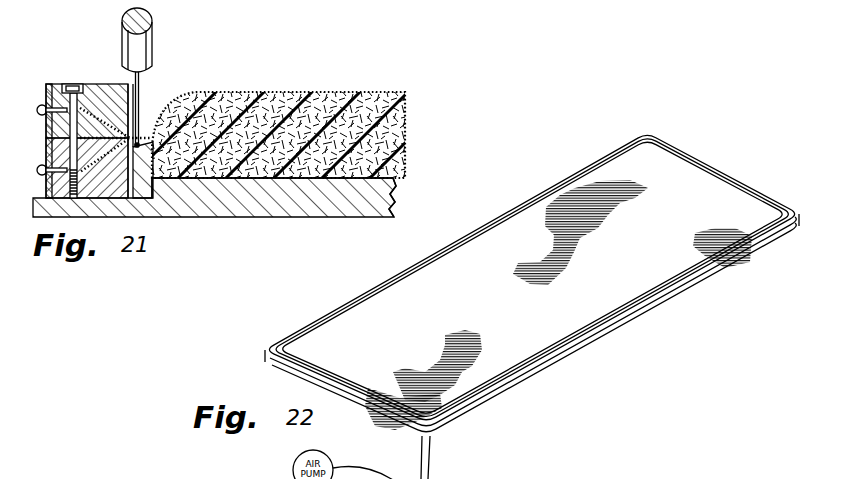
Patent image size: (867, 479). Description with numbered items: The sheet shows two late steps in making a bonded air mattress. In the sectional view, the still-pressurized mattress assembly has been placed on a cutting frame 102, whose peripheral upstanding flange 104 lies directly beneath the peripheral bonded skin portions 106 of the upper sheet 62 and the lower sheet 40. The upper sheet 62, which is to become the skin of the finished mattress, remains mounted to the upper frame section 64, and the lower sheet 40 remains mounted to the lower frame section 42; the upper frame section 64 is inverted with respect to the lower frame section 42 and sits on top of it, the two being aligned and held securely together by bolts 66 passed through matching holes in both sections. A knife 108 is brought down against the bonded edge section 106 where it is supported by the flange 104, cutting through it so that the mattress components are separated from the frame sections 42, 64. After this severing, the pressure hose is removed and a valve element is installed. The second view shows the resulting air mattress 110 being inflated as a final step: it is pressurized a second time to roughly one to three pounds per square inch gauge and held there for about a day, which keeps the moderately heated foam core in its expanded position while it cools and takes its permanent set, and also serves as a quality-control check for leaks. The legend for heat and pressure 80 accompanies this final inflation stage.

In FIG. 21, the lower sheet 40 is at (348, 190).
In FIG. 21, the lower frame section 42 is at (140, 199).
In FIG. 21, the upper sheet 62 is at (304, 93).
In FIG. 21, the upper frame section 64 is at (92, 83).
In FIG. 21, the bolt 66 is at (71, 85).
In FIG. 22, the heat and pressure source 80 is at (585, 471).
In FIG. 21, the cutting frame 102 is at (268, 207).
In FIG. 21, the peripheral upstanding flange 104 is at (180, 208).
In FIG. 21, the bonded skin portion 106 is at (156, 140).
In FIG. 21, the knife 108 is at (139, 82).
In FIG. 22, the air mattress 110 is at (480, 240).